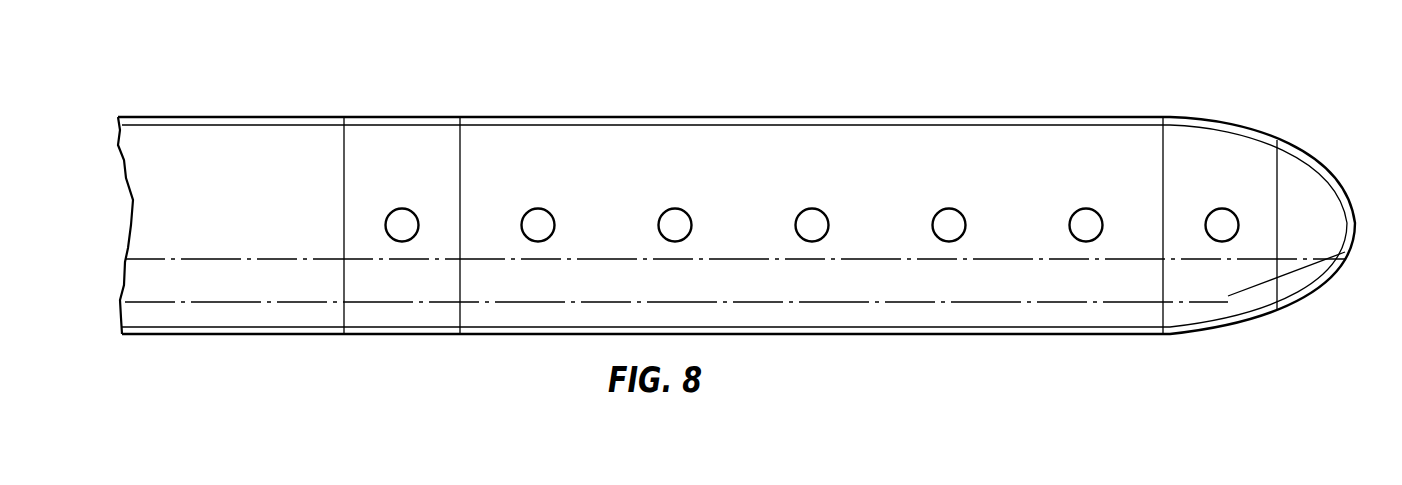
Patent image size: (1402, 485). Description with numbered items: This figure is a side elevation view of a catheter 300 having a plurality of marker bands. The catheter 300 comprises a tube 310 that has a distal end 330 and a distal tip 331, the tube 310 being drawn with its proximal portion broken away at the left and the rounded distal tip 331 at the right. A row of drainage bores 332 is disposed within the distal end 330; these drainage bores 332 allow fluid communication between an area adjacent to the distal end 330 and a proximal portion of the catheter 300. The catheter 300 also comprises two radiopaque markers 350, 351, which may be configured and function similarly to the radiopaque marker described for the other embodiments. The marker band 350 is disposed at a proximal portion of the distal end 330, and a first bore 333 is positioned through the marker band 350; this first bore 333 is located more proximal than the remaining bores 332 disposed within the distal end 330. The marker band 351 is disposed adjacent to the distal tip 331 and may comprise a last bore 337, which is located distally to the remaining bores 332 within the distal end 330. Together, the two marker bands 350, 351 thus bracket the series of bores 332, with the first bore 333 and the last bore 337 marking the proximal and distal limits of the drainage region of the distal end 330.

The catheter 300 is at (1113, 73).
The tube 310 is at (213, 117).
The distal end 330 is at (603, 118).
The distal tip 331 is at (1320, 203).
The drainage bores 332 is at (418, 238).
The first bore 333 is at (410, 214).
The last bore 337 is at (1212, 236).
The radiopaque marker band 350 is at (391, 143).
The radiopaque marker band 351 is at (1220, 137).